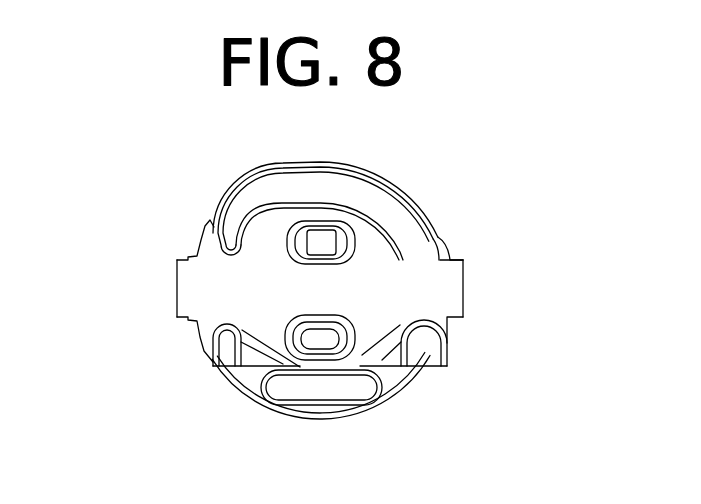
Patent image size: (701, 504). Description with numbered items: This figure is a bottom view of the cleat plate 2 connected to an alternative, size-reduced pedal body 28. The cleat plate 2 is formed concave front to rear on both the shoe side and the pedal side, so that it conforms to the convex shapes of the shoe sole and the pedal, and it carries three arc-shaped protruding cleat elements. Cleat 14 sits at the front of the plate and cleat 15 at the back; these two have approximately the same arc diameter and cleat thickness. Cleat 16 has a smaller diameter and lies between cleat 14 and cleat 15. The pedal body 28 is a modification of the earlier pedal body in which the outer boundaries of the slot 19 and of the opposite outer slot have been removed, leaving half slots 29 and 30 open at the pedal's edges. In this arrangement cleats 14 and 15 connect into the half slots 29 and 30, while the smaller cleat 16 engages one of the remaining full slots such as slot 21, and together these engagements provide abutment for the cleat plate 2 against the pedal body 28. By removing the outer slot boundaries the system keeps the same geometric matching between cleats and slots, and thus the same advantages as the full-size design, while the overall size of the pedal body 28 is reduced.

The cleat plate 2 is at (220, 371).
The cleat 14 is at (372, 213).
The cleat 15 is at (340, 382).
The cleat 16 is at (312, 339).
The arc shaped slot 19 is at (350, 348).
The arc shaped slot 21 is at (347, 252).
The pedal body 28 is at (175, 284).
The half slot 29 is at (422, 338).
The half slot 30 is at (427, 240).